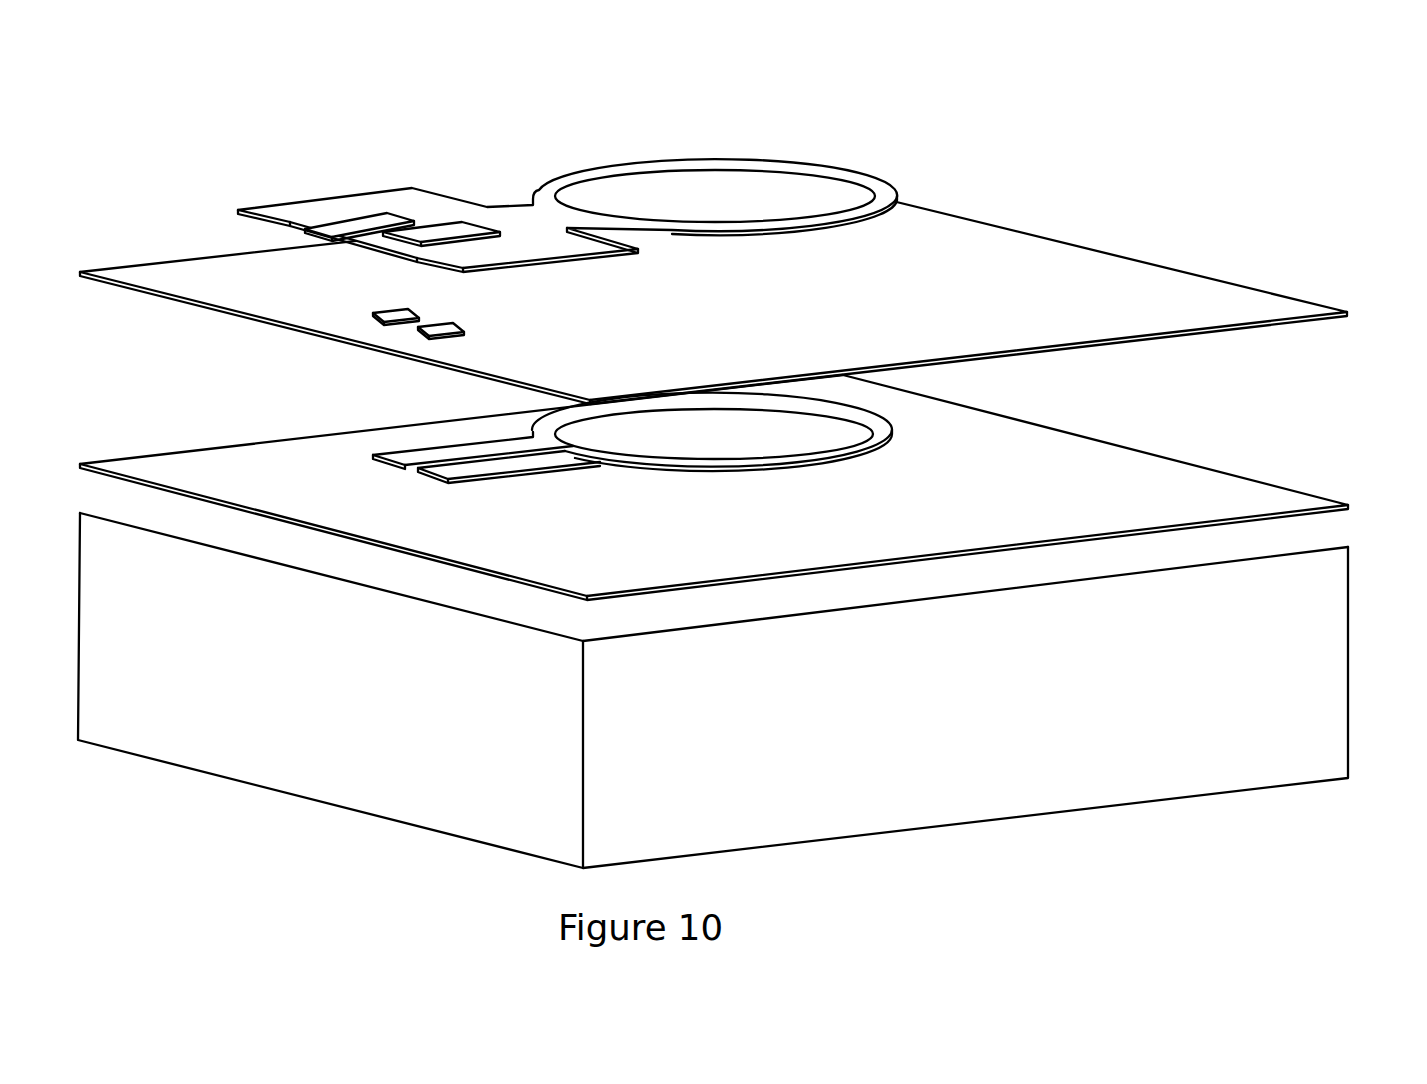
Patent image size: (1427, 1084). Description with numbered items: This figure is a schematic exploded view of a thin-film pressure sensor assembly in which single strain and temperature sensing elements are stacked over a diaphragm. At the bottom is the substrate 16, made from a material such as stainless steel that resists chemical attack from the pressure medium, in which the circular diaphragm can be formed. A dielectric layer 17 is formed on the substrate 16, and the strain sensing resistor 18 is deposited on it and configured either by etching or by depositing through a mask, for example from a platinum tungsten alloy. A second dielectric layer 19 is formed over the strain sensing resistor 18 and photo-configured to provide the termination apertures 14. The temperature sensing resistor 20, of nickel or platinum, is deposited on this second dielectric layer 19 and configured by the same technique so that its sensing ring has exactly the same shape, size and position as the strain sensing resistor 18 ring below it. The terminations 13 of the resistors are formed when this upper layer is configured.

The terminations 13 is at (277, 208).
The termination apertures 14 is at (422, 328).
The substrate 16 is at (1038, 712).
The dielectric layer 17 is at (993, 455).
The strain sensing resistor 18 is at (882, 427).
The second dielectric layer 19 is at (1017, 267).
The temperature sensing resistor 20 is at (882, 193).